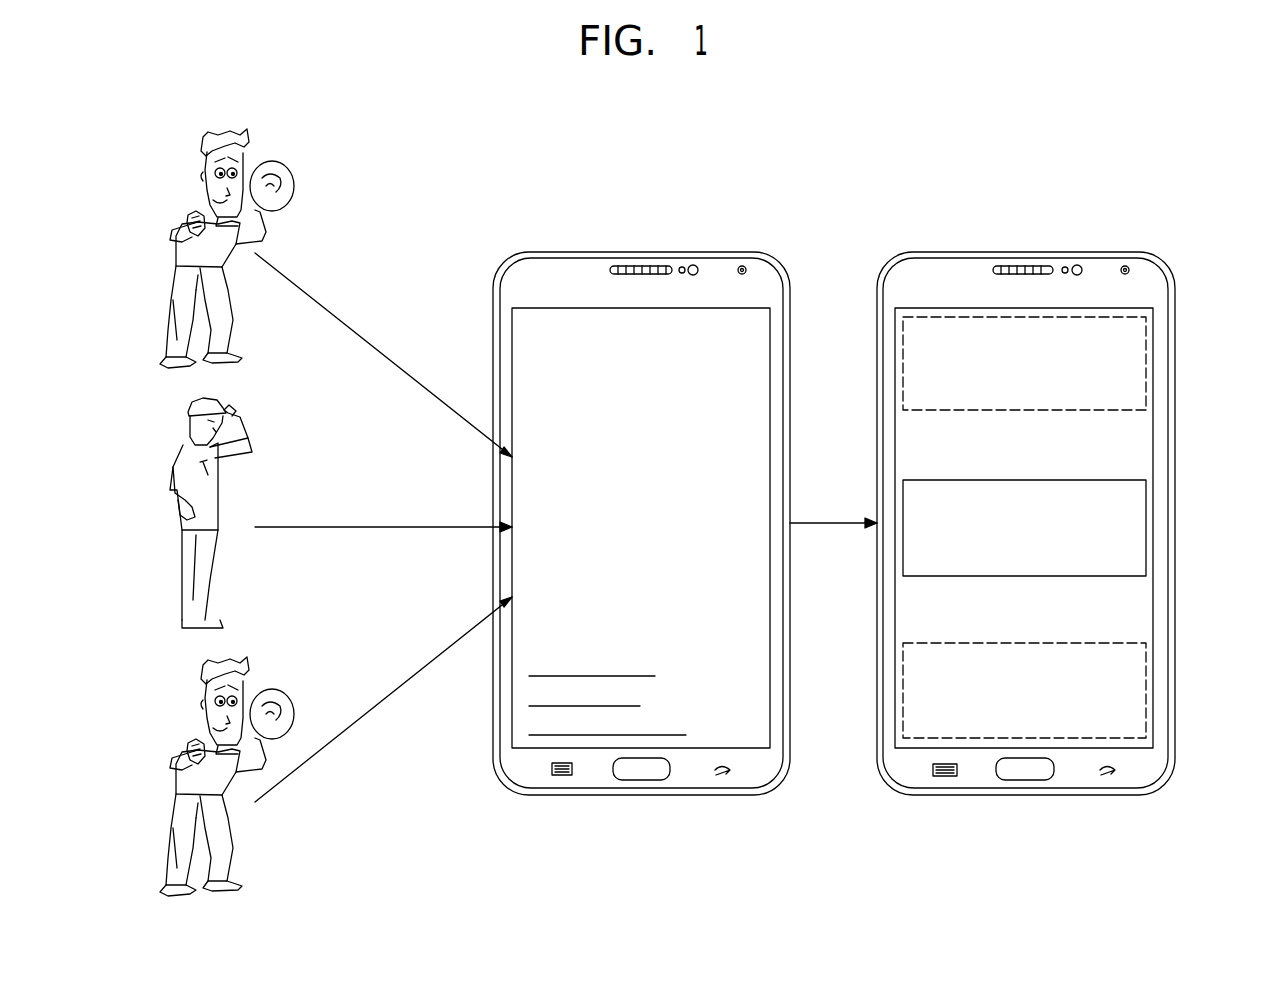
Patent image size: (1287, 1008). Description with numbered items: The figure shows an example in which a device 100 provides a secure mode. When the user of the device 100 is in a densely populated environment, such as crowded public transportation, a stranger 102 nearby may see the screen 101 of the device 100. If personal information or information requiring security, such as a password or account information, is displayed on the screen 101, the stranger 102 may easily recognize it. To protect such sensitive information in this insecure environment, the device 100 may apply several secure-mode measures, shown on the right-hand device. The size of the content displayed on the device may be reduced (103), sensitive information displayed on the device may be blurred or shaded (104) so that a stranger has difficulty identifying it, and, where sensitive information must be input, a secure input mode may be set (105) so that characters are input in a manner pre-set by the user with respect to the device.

The device 100 is at (640, 251).
The screen 101 is at (770, 318).
The stranger 102 is at (252, 149).
The reduced size of content 103 is at (1146, 362).
The blurred or shaded sensitive information 104 is at (1146, 527).
The secure input mode 105 is at (1146, 690).